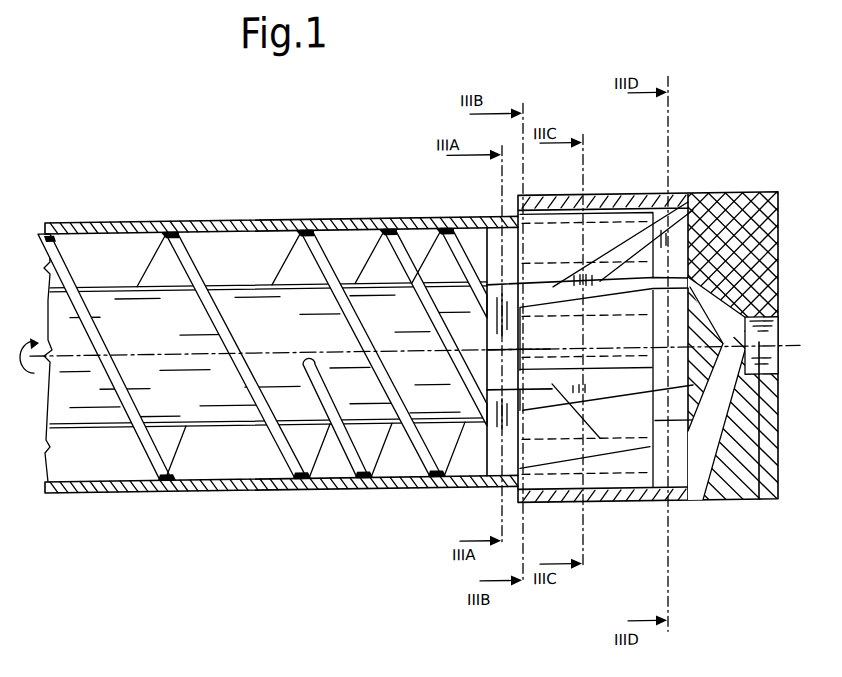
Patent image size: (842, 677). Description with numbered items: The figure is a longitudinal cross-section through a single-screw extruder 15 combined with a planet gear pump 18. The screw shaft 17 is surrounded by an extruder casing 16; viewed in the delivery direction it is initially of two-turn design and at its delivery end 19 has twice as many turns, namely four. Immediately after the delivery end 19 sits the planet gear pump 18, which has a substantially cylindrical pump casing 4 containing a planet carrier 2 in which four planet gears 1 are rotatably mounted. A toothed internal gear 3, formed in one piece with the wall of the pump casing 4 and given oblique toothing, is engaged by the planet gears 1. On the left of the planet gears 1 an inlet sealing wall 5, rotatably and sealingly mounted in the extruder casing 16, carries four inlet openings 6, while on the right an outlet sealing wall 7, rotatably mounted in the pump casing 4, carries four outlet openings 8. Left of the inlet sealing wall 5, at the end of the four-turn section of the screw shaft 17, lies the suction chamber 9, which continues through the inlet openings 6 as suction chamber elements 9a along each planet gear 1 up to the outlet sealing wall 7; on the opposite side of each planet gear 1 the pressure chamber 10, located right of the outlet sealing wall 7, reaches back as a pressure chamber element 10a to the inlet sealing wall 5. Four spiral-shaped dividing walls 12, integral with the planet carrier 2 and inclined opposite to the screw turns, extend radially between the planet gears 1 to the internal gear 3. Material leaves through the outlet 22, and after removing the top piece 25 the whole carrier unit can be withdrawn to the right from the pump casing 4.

The planet gear 1 is at (494, 222).
The planet carrier 2 is at (665, 215).
The internal gear 3 is at (597, 210).
The pump casing 4 is at (633, 200).
The inlet sealing wall 5 is at (412, 250).
The inlet openings 6 is at (452, 240).
The outlet sealing wall 7 is at (700, 205).
The outlet openings 8 is at (698, 511).
The suction chamber 9 is at (505, 438).
The suction chamber elements 9a is at (552, 391).
The pressure chamber 10 is at (738, 204).
The pressure chamber element 10a is at (764, 204).
The dividing walls 12 is at (690, 206).
The screw extruder 15 is at (153, 520).
The extruder casing 16 is at (247, 222).
The screw shaft 17 is at (57, 398).
The planet gear pump 18 is at (617, 562).
The delivery end 19 is at (330, 491).
The outlet 22 is at (759, 509).
The top piece 25 is at (733, 512).